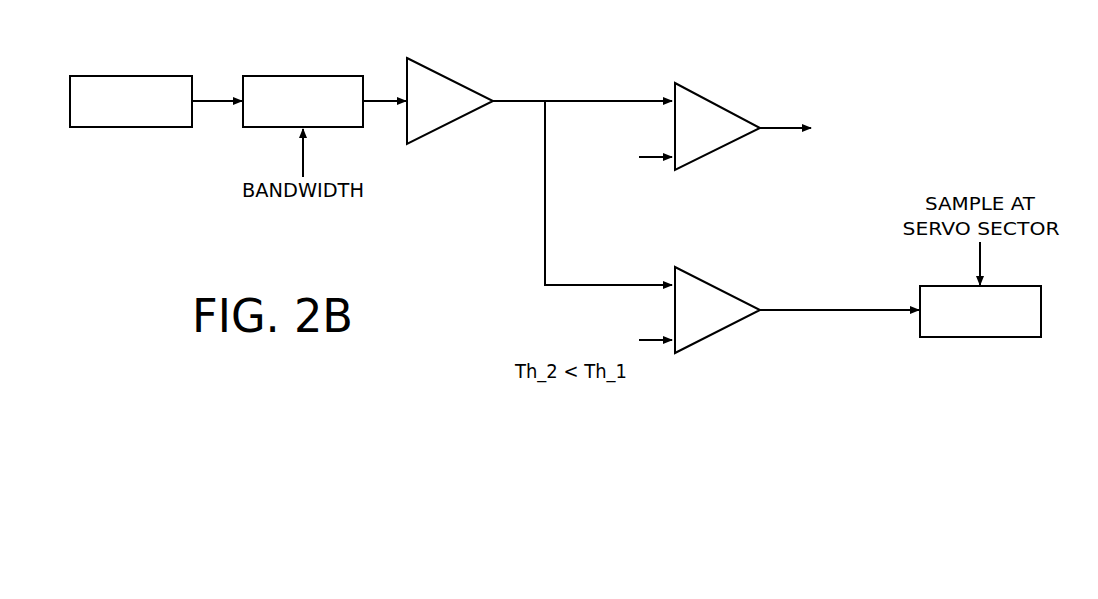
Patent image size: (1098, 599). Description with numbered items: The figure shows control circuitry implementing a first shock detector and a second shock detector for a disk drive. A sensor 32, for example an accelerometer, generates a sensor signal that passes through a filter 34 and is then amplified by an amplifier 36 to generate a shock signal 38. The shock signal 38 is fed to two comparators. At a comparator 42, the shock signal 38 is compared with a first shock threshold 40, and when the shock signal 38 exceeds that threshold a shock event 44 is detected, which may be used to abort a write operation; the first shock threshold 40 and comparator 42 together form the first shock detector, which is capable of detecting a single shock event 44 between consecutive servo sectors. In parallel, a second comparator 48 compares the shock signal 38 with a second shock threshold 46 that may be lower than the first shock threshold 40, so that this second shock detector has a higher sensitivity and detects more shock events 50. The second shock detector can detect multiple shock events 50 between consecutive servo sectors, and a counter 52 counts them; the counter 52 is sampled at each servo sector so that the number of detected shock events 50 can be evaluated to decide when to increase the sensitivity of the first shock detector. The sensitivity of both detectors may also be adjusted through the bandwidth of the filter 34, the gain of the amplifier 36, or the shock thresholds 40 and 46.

The sensor 32 is at (128, 75).
The filter 34 is at (301, 75).
The amplifier 36 is at (448, 78).
The shock signal 38 is at (525, 100).
The first shock threshold 40 is at (652, 159).
The comparator 42 is at (713, 102).
The shock event 44 is at (775, 129).
The second shock threshold 46 is at (652, 341).
The second comparator 48 is at (712, 284).
The shock events 50 is at (775, 312).
The counter 52 is at (980, 339).